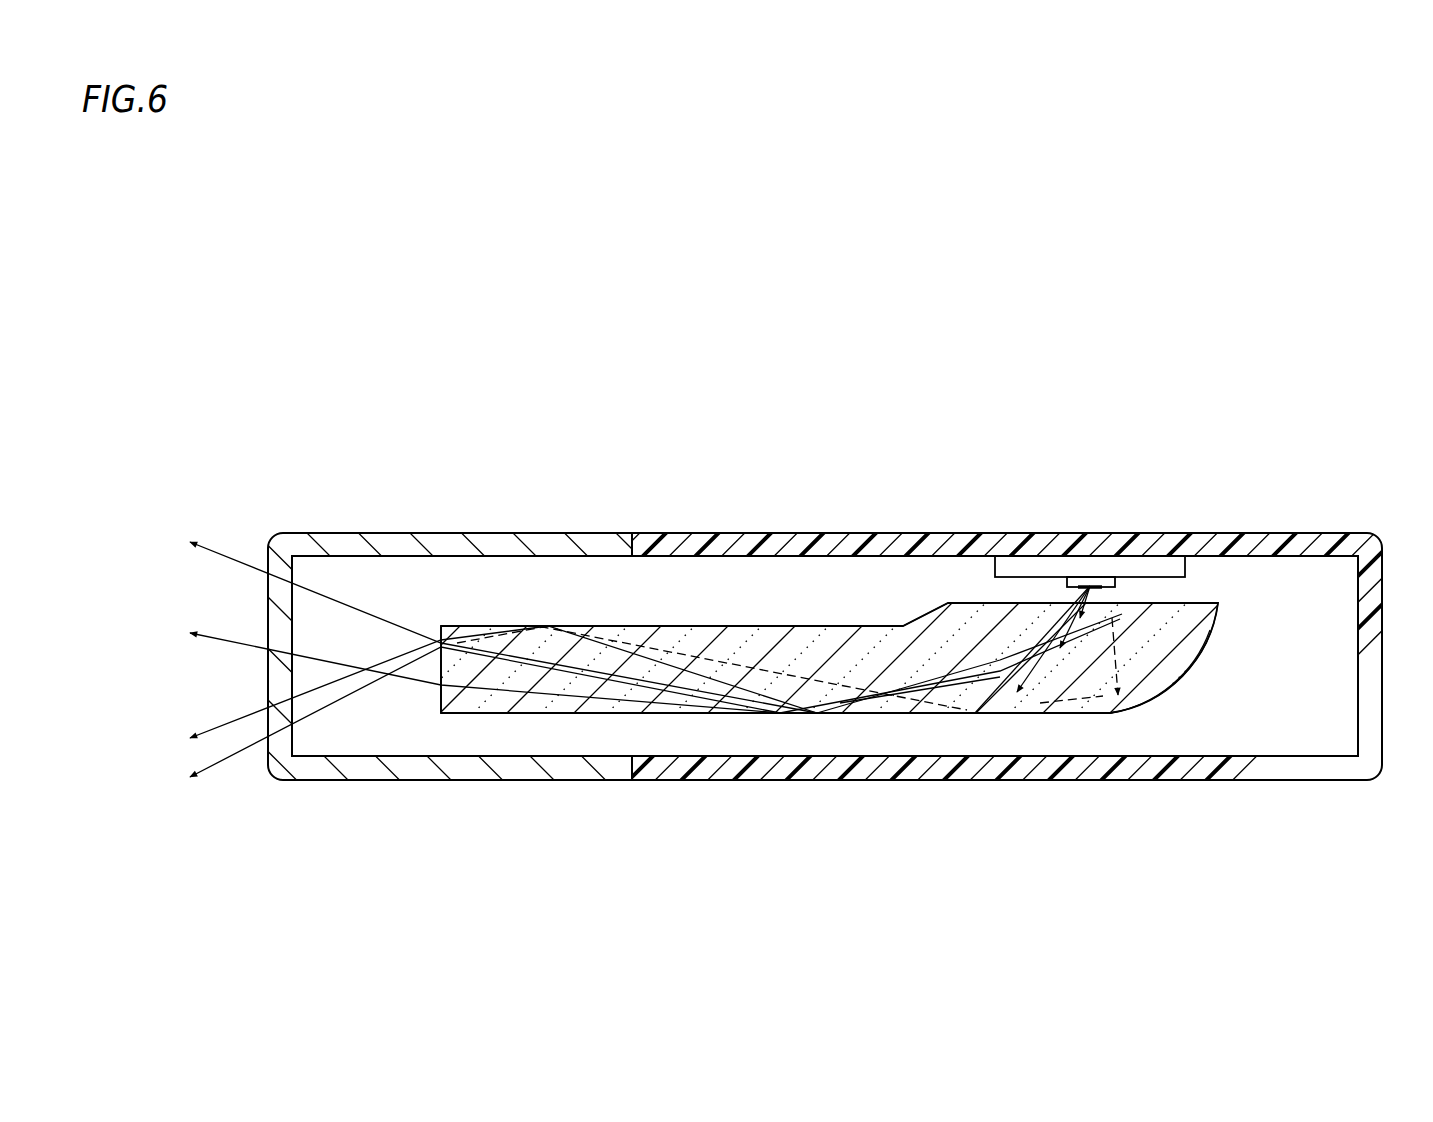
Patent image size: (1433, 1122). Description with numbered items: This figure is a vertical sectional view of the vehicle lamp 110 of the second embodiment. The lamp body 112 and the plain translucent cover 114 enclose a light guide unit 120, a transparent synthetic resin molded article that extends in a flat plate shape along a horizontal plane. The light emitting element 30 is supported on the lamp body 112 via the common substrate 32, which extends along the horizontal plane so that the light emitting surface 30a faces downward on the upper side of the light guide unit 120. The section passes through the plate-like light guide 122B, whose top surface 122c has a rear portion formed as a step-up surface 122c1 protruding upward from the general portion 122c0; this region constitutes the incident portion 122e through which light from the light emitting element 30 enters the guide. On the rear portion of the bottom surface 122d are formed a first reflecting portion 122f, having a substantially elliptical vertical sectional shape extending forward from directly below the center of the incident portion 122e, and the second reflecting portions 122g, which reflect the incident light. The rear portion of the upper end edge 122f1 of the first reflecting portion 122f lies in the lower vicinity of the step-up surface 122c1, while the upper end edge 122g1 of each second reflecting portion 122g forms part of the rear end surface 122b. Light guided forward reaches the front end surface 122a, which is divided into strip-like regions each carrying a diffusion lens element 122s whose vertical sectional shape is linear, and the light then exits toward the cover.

The vehicle lamp 110 is at (532, 303).
The lamp body 112 is at (1309, 531).
The plain translucent cover 114 is at (312, 530).
The light guide unit 120 is at (572, 611).
The plate-like light guide 122B is at (725, 623).
The top surface 122c is at (960, 480).
The general portion 122c0 is at (823, 626).
The step-up surface 122c1 is at (963, 604).
The incident portion 122e is at (1068, 604).
The upper end edge of second reflecting portion 122g1 is at (1193, 607).
The rear end surface 122b is at (1217, 623).
The second reflecting portion 122g is at (1152, 675).
The upper end edge of first reflecting portion 122f1 is at (1098, 628).
The first reflecting portion 122f is at (1050, 645).
The bottom surface 122d is at (687, 715).
The diffusion lens element 122s is at (441, 637).
The front end surface 122a is at (441, 691).
The light emitting element 30 is at (1101, 566).
The light emitting surface 30a is at (1092, 592).
The common substrate 32 is at (1152, 567).